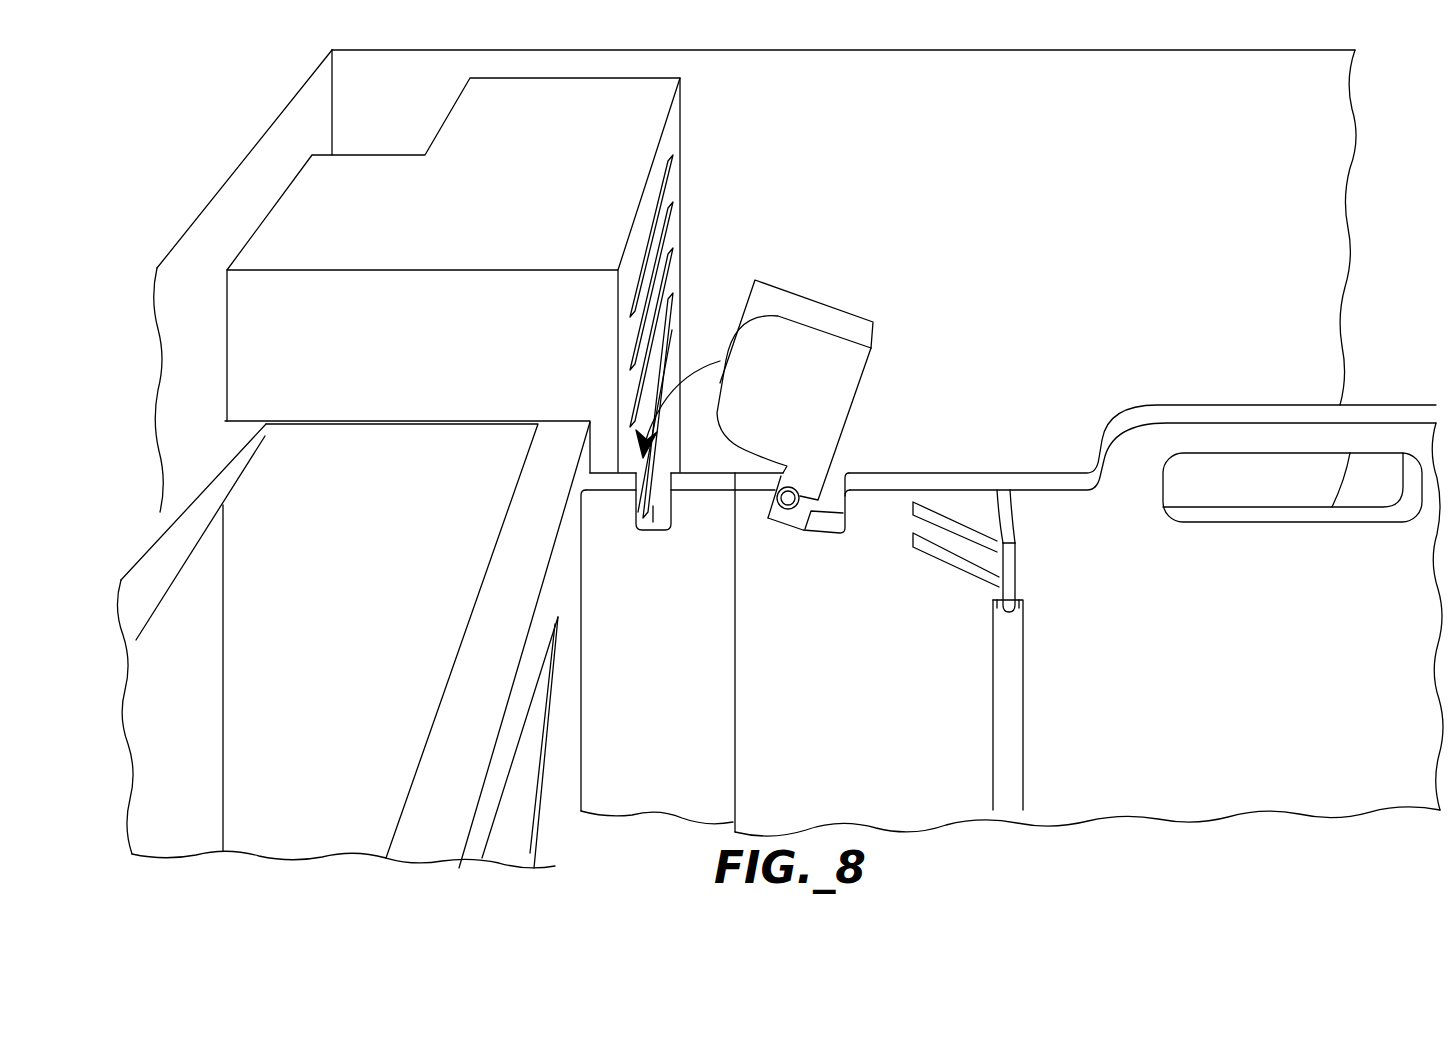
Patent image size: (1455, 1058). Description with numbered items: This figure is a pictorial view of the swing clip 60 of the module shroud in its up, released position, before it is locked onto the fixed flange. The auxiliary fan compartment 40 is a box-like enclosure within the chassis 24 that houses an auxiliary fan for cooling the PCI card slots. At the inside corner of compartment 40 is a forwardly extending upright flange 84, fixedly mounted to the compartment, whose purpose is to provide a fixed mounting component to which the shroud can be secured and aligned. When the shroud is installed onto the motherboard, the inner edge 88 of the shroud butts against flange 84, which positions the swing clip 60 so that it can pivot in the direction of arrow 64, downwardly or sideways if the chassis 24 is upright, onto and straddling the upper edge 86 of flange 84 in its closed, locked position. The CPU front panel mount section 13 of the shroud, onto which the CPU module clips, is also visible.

The CPU front panel mount section 13 is at (1268, 410).
The chassis 24 is at (958, 251).
The auxiliary fan compartment 40 is at (478, 197).
The swing clip 60 is at (868, 365).
The arrow 64 is at (692, 378).
The upright flange 84 is at (716, 531).
The upper edge 86 is at (660, 490).
The inner edge 88 is at (735, 575).